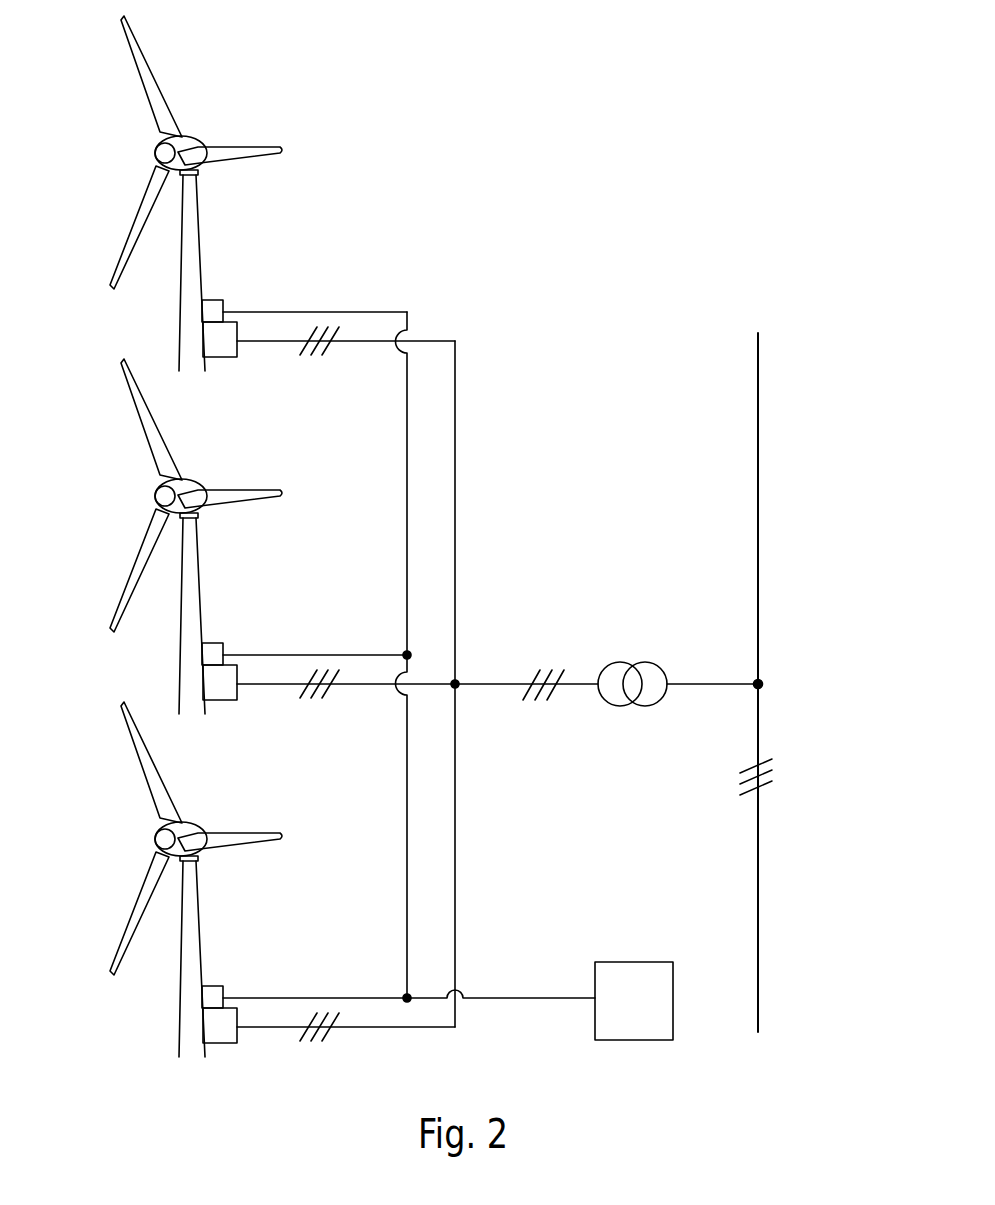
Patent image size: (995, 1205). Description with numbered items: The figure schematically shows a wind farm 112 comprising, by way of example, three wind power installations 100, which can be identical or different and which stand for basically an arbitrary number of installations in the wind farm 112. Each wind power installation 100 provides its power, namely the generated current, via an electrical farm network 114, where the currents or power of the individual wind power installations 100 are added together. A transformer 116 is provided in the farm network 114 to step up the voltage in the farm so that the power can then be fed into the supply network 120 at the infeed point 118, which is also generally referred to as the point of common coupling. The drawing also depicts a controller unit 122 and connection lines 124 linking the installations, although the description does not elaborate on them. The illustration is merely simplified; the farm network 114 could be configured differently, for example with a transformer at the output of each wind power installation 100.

The wind power installation 100 is at (187, 263).
The wind farm 112 is at (590, 187).
The electrical farm network 114 is at (482, 684).
The transformer 116 is at (642, 632).
The infeed point 118 is at (780, 657).
The supply network 120 is at (759, 410).
The farm controller 122 is at (625, 962).
The communication / connection lines 124 is at (407, 828).